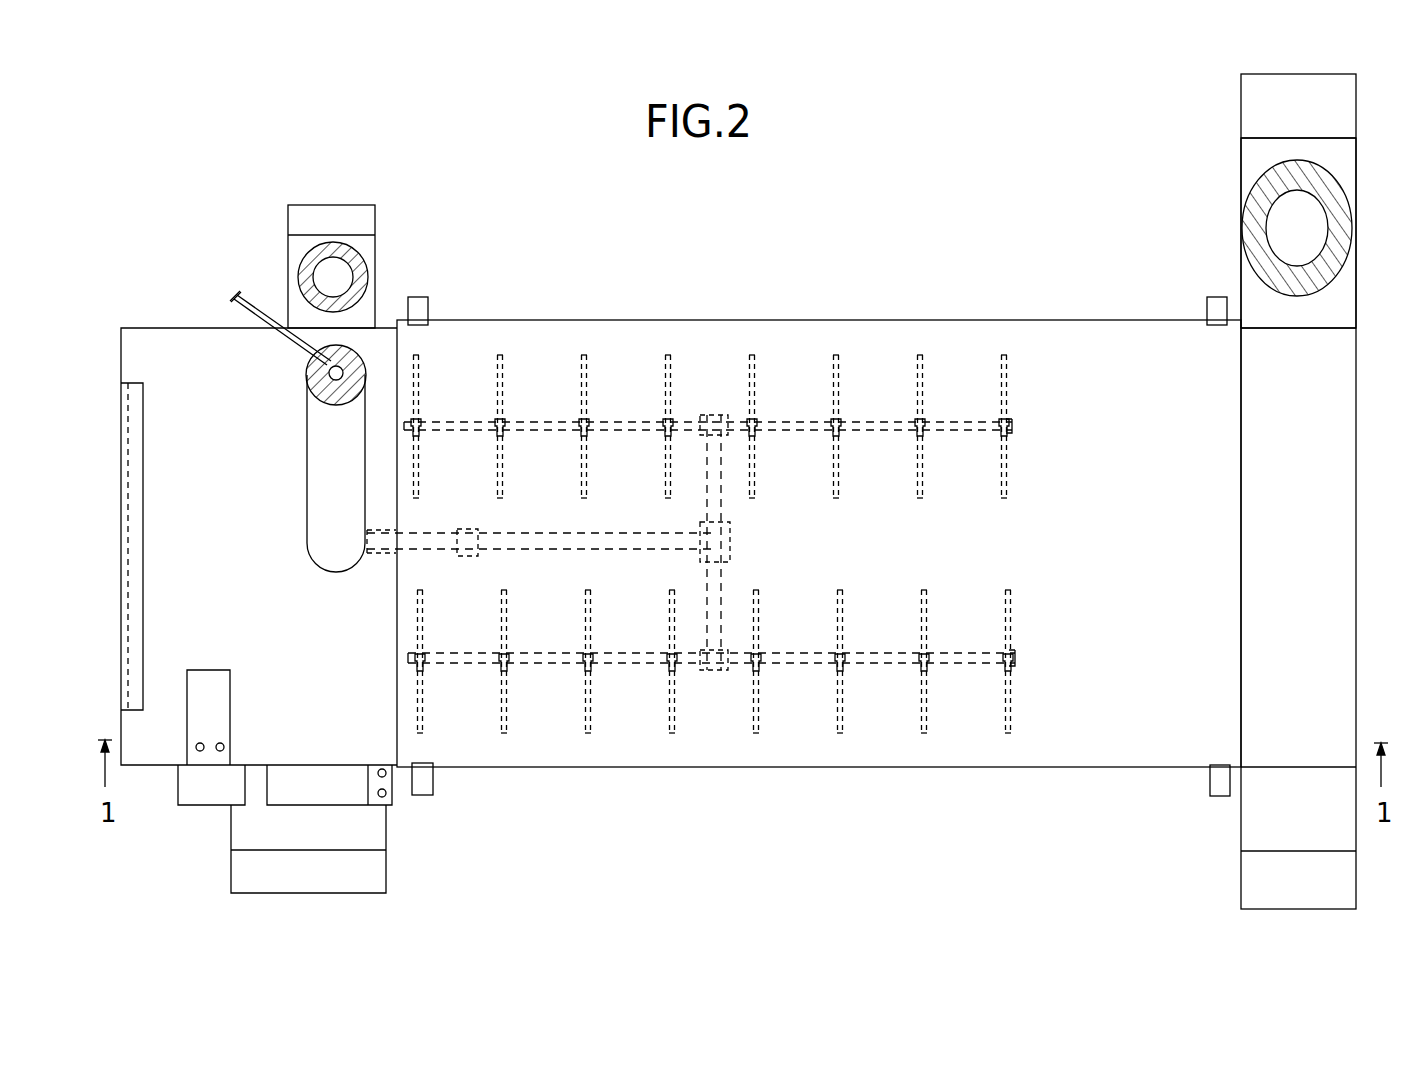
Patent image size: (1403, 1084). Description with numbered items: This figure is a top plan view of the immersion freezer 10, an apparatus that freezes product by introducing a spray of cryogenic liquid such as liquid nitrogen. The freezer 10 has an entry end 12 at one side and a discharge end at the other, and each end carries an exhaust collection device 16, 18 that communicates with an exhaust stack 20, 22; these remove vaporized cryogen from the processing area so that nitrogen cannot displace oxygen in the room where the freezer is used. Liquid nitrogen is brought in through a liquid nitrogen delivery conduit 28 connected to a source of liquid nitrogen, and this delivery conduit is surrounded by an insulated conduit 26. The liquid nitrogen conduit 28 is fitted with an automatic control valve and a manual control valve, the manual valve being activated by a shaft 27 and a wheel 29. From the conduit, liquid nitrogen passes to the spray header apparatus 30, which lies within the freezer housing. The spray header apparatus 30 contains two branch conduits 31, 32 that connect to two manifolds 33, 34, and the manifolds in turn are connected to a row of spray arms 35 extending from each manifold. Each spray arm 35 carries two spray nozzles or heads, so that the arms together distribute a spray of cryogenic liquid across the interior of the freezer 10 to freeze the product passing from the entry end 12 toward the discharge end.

The immersion freezer 10 is at (824, 314).
The entry end 12 is at (1358, 388).
The exhaust collection device 16 is at (1250, 284).
The exhaust collection device 18 is at (372, 243).
The exhaust stack 20 is at (1247, 221).
The exhaust stack 22 is at (360, 281).
The insulated conduit 26 is at (330, 401).
The shaft 27 is at (297, 320).
The liquid nitrogen delivery conduit 28 is at (314, 381).
The wheel 29 is at (233, 295).
The spray header apparatus 30 is at (390, 552).
The branch conduit 31 is at (503, 547).
The branch conduit 32 is at (720, 490).
The manifold 33 is at (775, 422).
The manifold 34 is at (772, 652).
The spray arm 35 is at (921, 401).